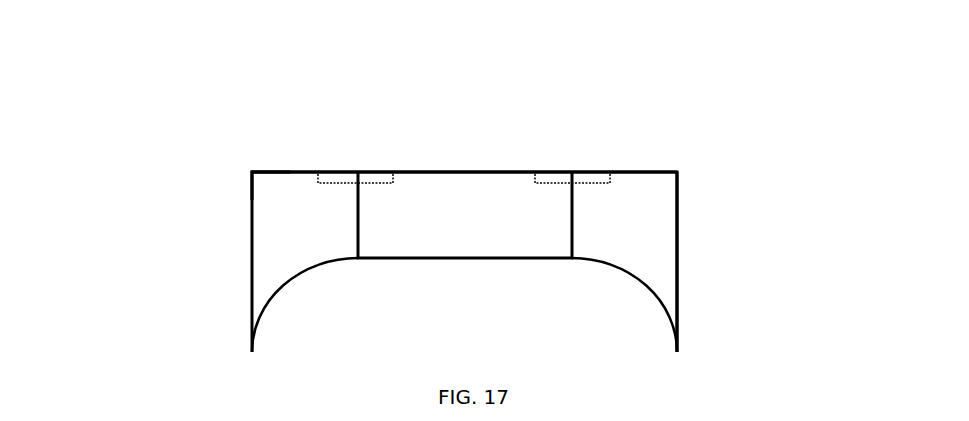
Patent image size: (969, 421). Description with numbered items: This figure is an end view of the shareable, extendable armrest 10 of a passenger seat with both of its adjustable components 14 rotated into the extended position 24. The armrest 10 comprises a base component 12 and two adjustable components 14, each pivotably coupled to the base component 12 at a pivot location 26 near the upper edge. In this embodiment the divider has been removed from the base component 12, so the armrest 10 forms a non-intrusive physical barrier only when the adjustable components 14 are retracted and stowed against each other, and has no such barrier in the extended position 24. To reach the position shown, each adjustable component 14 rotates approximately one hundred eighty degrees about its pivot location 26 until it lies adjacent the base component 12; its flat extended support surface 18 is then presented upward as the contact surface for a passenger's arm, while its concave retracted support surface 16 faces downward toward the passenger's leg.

The armrest 10 is at (747, 115).
The base component 12 is at (507, 247).
The adjustable component 14 is at (667, 262).
The retracted support surface 16 is at (285, 285).
The extended support surface 18 is at (295, 177).
The extended position 24 is at (183, 173).
The pivot location 26 is at (588, 175).